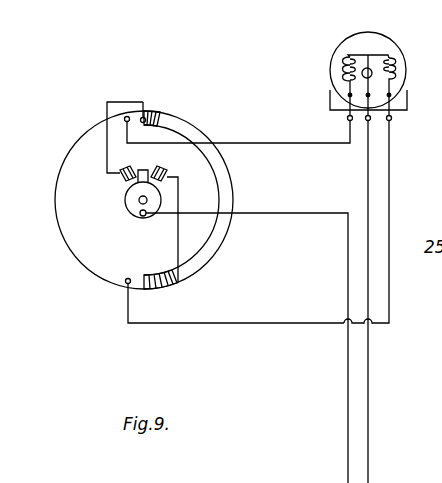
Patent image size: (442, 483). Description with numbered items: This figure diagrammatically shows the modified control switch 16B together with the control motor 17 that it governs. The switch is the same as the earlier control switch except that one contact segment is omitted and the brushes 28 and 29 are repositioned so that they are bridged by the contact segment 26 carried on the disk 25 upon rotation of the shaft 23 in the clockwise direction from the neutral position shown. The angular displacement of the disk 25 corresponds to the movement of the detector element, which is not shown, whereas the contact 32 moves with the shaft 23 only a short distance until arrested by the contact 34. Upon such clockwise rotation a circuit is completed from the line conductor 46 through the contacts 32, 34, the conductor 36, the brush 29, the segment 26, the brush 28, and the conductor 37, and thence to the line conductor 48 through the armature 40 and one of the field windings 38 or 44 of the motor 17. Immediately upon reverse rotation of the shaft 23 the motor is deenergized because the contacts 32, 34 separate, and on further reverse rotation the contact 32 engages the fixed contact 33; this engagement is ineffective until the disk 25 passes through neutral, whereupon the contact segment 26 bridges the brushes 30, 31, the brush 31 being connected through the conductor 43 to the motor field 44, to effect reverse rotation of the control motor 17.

The motor 17 is at (377, 52).
The motor field 44 is at (345, 67).
The field 38 is at (393, 63).
The armature 40 is at (371, 77).
The conductor 43 is at (257, 135).
The control switch 16B is at (275, 187).
The brush 30 is at (128, 116).
The brush 31 is at (150, 117).
The fixed contact 33 is at (128, 170).
The contact 34 is at (163, 172).
The shaft 23 is at (139, 202).
The contact 32 is at (140, 216).
The disk 25 is at (73, 258).
The contact segment 26 is at (202, 262).
The conductor 36 is at (179, 235).
The brush 28 is at (127, 284).
The brush 29 is at (141, 290).
The conductor 37 is at (290, 322).
The line conductor 46 is at (347, 426).
The line conductor 48 is at (369, 426).